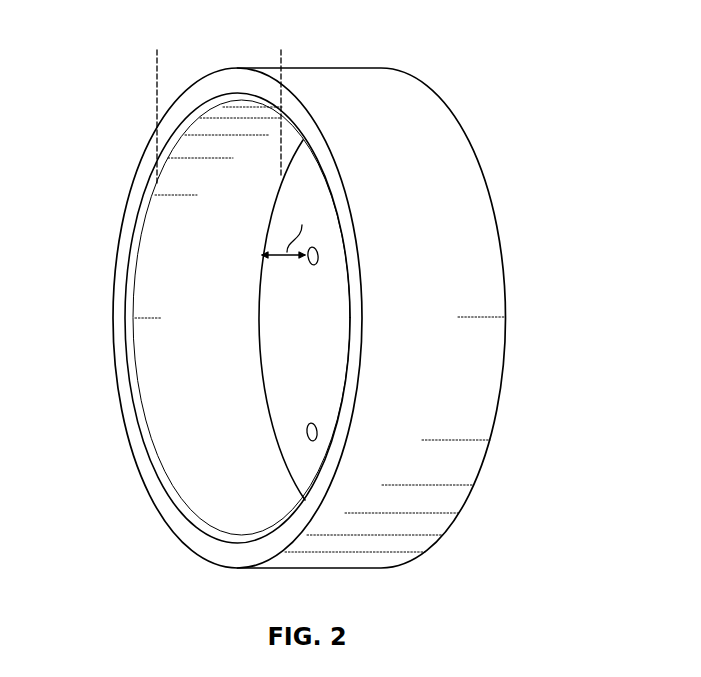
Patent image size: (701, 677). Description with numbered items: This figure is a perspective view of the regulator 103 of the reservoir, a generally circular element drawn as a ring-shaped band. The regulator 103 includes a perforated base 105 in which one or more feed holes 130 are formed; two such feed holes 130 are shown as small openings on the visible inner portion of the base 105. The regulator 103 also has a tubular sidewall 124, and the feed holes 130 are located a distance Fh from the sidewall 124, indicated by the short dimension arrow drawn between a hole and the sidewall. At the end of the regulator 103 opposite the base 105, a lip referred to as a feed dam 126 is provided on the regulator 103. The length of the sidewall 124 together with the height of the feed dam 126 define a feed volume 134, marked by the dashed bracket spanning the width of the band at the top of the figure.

The regulator 103 is at (336, 80).
The perforated base 105 is at (293, 350).
The tubular sidewall 124 is at (150, 352).
The feed dam 126 is at (150, 440).
The feed holes 130 is at (308, 265).
The feed volume 134 is at (157, 53).